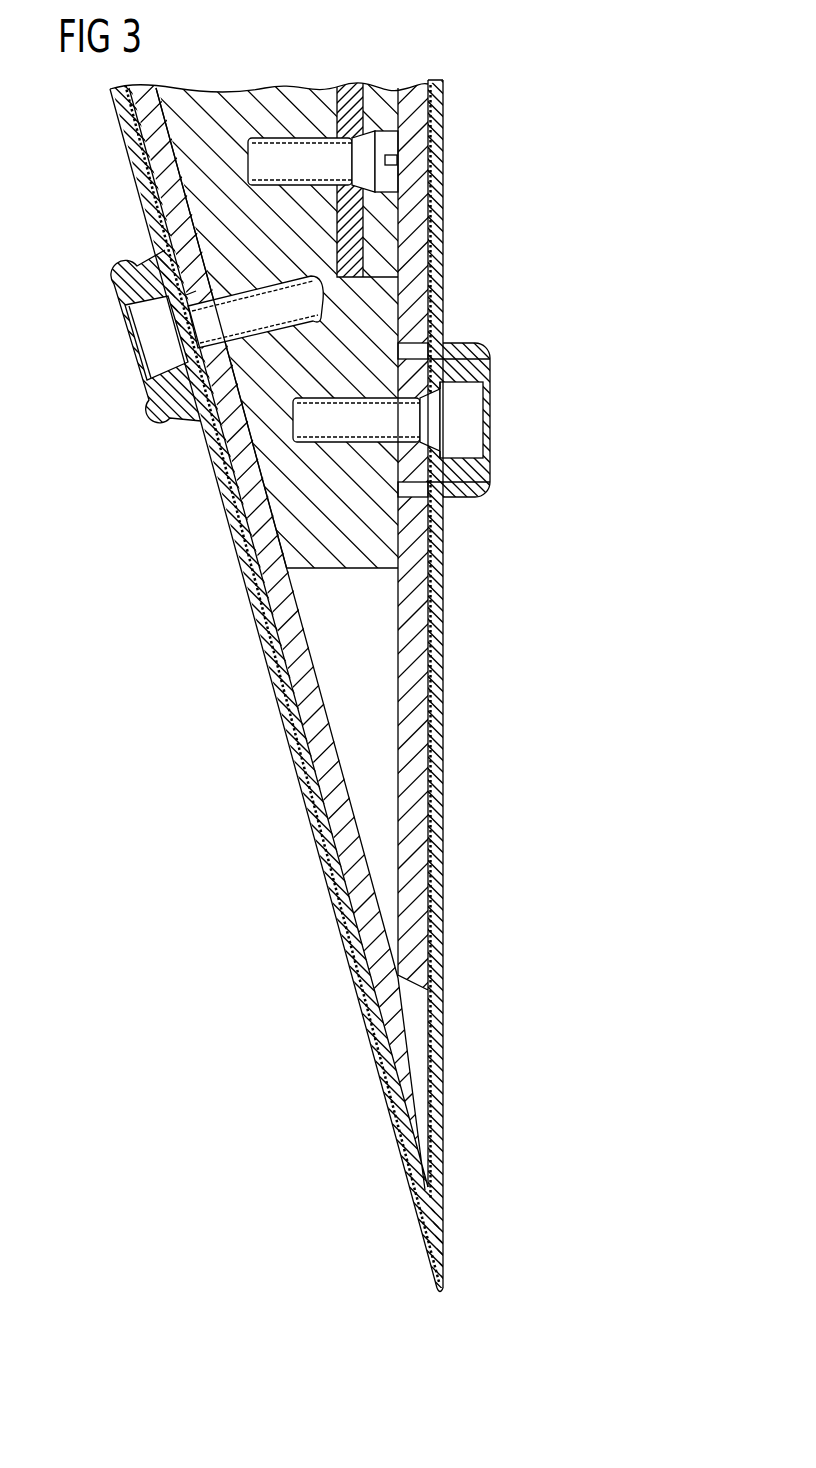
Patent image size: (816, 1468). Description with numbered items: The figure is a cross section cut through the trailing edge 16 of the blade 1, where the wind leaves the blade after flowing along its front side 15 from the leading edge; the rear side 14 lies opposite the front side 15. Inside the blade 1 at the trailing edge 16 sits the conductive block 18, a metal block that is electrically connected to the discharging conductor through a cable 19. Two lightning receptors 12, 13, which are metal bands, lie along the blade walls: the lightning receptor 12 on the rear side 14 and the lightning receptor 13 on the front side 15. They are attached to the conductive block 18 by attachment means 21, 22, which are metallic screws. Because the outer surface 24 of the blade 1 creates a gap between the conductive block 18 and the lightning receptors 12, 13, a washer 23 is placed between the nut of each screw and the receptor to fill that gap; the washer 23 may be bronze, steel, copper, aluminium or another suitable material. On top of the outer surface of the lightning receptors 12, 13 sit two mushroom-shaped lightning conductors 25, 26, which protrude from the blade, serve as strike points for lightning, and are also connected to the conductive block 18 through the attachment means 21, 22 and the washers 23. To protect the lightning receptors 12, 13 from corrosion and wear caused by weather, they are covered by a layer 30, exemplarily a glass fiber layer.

The blade 1 is at (548, 88).
The lightning receptor 12 is at (430, 147).
The lightning receptor 13 is at (133, 154).
The rear side 14 is at (480, 682).
The front side 15 is at (235, 682).
The trailing edge 16 is at (441, 1305).
The conductive block 18 is at (237, 98).
The cable 19 is at (348, 88).
The attachment means 21 is at (476, 418).
The attachment means 22 is at (142, 342).
The washer 23 is at (188, 286).
The outer surface 24 is at (338, 815).
The lightning conductor 25 is at (468, 470).
The lightning conductor 26 is at (158, 392).
The layer 30 is at (140, 197).